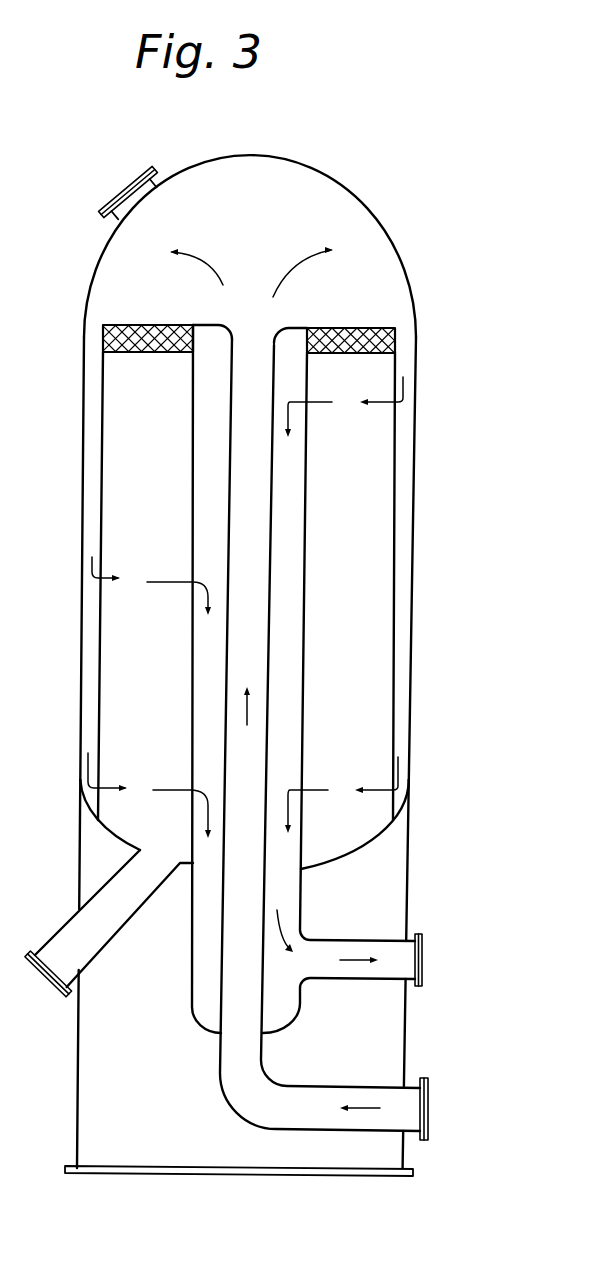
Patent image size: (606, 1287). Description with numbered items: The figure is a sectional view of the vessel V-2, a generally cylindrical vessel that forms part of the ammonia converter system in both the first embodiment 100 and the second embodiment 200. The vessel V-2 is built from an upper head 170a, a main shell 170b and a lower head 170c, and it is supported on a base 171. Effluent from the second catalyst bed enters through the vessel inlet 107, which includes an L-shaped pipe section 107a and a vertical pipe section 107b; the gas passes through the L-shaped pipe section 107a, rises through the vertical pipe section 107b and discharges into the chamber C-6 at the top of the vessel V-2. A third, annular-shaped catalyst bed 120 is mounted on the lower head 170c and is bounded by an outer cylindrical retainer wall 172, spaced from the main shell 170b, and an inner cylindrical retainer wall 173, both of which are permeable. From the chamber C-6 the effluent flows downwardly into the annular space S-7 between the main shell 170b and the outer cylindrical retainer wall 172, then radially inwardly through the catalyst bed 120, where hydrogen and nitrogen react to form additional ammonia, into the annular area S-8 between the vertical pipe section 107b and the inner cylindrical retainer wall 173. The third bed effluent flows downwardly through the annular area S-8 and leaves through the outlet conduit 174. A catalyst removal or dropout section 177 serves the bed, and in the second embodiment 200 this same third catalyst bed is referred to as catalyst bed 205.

The vessel V-2 is at (234, 642).
The upper head 170a is at (341, 178).
The main shell 170b is at (83, 396).
The lower head 170c is at (110, 832).
The base 171 is at (76, 1062).
The outer cylindrical retainer wall 172 is at (100, 422).
The inner cylindrical retainer wall 173 is at (198, 358).
The outlet conduit 174 is at (343, 940).
The catalyst removal or dropout section 177 is at (62, 933).
The first embodiment 100 is at (68, 512).
The third catalyst bed 120 is at (123, 478).
The second embodiment 200 is at (68, 728).
The catalyst bed 205 is at (130, 735).
The vessel inlet 107 is at (411, 1142).
The L-shaped pipe section 107a is at (338, 1087).
The vertical pipe section 107b is at (252, 590).
The annular space S-7 is at (85, 645).
The annular area S-8 is at (293, 497).
The chamber C-6 is at (270, 235).